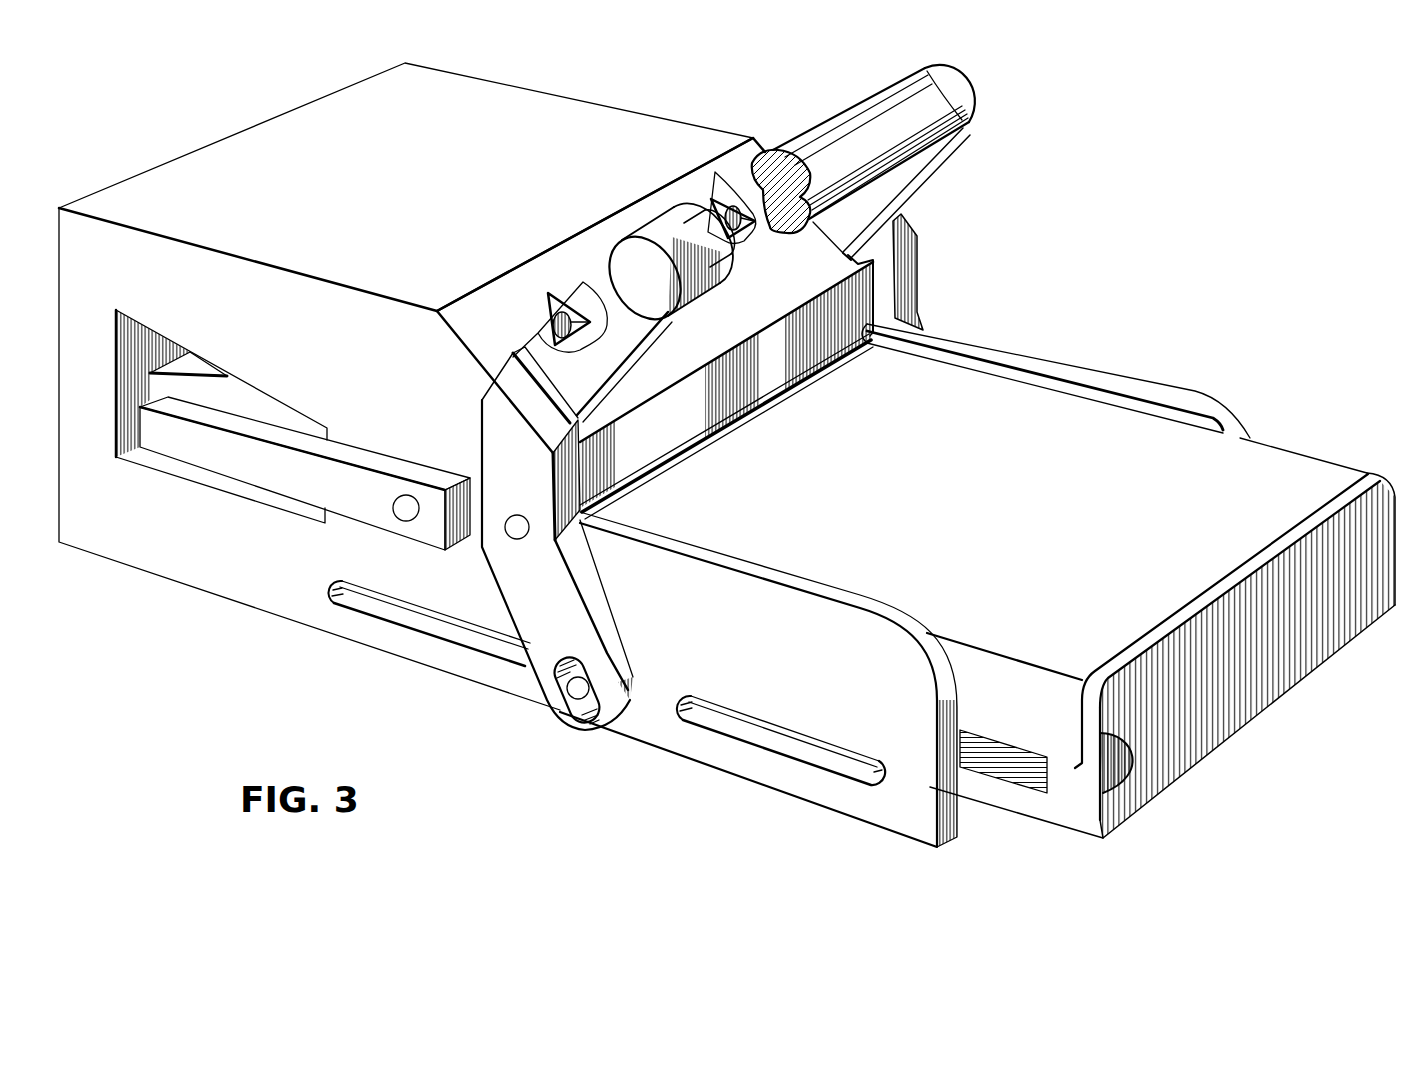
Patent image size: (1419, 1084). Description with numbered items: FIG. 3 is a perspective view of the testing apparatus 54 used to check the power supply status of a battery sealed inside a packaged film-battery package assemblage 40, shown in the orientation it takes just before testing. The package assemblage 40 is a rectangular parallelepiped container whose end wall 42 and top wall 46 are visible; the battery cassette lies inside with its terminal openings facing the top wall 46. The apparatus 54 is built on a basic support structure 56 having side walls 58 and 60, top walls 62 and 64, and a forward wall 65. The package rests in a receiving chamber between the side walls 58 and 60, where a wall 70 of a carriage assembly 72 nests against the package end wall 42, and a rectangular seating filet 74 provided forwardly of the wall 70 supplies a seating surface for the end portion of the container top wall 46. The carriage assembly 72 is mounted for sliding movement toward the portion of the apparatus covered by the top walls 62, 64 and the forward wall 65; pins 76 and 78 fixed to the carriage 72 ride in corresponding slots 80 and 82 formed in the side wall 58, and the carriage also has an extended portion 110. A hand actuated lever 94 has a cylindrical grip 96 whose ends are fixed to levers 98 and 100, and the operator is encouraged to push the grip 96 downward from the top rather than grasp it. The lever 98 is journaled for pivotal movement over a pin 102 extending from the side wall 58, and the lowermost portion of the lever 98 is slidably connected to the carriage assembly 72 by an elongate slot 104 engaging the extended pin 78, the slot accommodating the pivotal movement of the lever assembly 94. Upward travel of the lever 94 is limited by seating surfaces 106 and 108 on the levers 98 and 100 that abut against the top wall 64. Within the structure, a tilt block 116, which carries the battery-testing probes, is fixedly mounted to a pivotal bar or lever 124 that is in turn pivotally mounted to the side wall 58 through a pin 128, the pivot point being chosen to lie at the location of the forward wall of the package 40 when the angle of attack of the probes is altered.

The package assemblage 40 is at (1236, 488).
The end wall 42 is at (1370, 470).
The top wall 46 is at (1289, 455).
The testing apparatus 54 is at (787, 122).
The basic support structure 56 is at (372, 668).
The side wall 58 is at (657, 727).
The side wall 60 is at (1044, 356).
The top wall 62 is at (568, 122).
The top wall 64 is at (710, 162).
The forward wall 65 is at (868, 293).
The wall of carriage assembly 70 is at (1135, 810).
The carriage assembly 72 is at (1014, 803).
The rectangular seating filet 74 is at (1070, 780).
The pin 76 is at (873, 775).
The pin 78 is at (578, 699).
The slot 80 is at (743, 739).
The slot 82 is at (467, 637).
The hand actuated lever 94 is at (982, 95).
The cylindrical grip 96 is at (875, 105).
The lever 98 is at (500, 433).
The lever 100 is at (908, 182).
The pin 102 is at (513, 533).
The slot 104 is at (567, 687).
The seating surface 106 is at (595, 420).
The seating surface 108 is at (850, 257).
The extended portion of carriage 110 is at (718, 186).
The tilt block 116 is at (218, 376).
The pivotal bar or lever 124 is at (290, 462).
The hole 128 is at (400, 512).